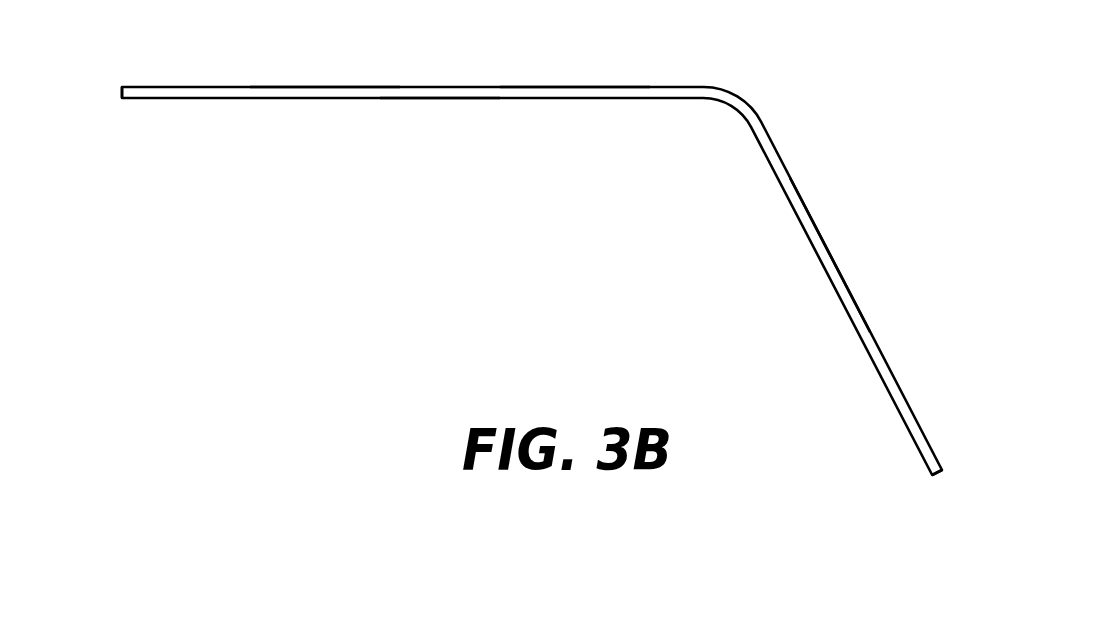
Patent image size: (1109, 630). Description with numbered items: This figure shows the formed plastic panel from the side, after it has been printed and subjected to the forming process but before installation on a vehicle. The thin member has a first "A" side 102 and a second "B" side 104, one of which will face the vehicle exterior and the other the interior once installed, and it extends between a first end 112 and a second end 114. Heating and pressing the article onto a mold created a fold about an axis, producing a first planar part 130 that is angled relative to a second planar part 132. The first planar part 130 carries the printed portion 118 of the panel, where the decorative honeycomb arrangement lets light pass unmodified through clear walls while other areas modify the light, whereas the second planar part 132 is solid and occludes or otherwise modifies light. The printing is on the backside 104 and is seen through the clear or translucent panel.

The first "A" side 102 is at (481, 76).
The second "B" side 104 is at (543, 128).
The first end 112 is at (122, 88).
The second end 114 is at (937, 477).
The portion of the panel 118 is at (434, 98).
The first planar part 130 is at (321, 128).
The second planar part 132 is at (772, 286).